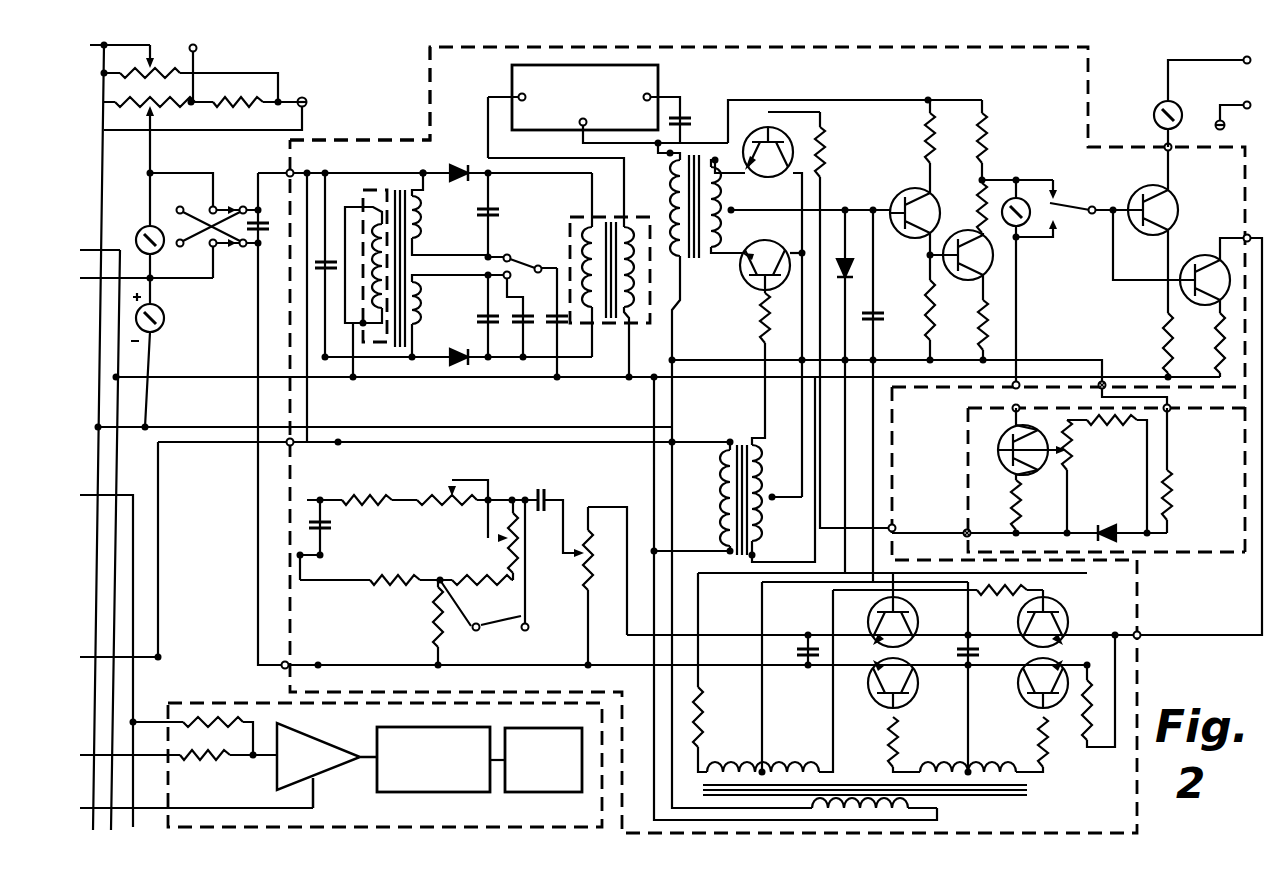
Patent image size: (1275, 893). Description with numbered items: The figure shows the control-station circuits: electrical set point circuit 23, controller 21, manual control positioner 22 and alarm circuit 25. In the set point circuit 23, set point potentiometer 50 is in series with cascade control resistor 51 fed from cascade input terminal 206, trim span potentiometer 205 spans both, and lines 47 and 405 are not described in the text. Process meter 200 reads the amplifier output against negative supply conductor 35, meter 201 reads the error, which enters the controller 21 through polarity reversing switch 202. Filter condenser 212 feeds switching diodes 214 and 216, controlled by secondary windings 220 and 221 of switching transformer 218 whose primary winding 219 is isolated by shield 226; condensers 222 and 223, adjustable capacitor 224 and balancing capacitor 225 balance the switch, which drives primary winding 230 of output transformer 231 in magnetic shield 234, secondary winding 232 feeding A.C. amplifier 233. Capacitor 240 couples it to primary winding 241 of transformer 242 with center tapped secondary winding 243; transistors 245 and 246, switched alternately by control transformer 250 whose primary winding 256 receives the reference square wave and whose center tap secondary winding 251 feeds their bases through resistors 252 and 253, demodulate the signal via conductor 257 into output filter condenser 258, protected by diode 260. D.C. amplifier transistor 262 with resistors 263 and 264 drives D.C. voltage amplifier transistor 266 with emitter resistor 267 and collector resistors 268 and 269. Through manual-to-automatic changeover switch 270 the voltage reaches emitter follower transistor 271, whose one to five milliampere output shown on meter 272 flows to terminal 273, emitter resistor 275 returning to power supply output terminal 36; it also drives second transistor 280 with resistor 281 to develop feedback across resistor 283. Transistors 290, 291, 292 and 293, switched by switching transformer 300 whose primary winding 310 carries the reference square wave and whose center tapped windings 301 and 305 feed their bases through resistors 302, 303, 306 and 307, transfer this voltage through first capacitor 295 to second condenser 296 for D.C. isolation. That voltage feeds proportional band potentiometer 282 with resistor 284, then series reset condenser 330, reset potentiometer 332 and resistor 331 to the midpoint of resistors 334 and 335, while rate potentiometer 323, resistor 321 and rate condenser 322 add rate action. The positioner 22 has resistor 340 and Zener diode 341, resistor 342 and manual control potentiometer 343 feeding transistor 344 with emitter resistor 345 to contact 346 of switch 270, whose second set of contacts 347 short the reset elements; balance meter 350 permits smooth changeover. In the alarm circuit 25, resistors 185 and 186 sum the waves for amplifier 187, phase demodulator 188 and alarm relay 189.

The controller 21 is at (776, 440).
The manual control positioner 22 is at (1068, 469).
The electrical set point circuit 23 is at (363, 108).
The alarm circuit 25 is at (385, 765).
The negative supply conductor 35 is at (99, 456).
The power supply output terminal 36 is at (178, 380).
The conductor 47 is at (90, 45).
The set point potentiometer 50 is at (128, 110).
The cascade control resistor 51 is at (226, 106).
The resistor 185 is at (213, 727).
The resistor 186 is at (186, 758).
The amplifier 187 is at (340, 726).
The phase demodulator 188 is at (430, 726).
The alarm relay 189 is at (550, 726).
The process meter 200 is at (162, 318).
The meter 201 is at (140, 232).
The polarity reversing switch 202 is at (226, 200).
The trim span potentiometer 205 is at (160, 80).
The cascade input terminal 206 is at (234, 72).
The filter condenser 212 is at (318, 268).
The first switching diode 214 is at (458, 165).
The second switching diode 216 is at (458, 370).
The switching transformer 218 is at (396, 188).
The primary winding 219 is at (368, 232).
The secondary winding 220 is at (425, 218).
The secondary winding 221 is at (426, 298).
The condenser 222 is at (498, 212).
The condenser 223 is at (478, 320).
The adjustable capacitor 224 is at (515, 330).
The balancing capacitor 225 is at (548, 335).
The shield 226 is at (362, 188).
The primary winding 230 is at (580, 243).
The output transformer 231 is at (611, 216).
The secondary winding 232 is at (628, 312).
The A.C. amplifier 233 is at (512, 70).
The magnetic shield 234 is at (580, 212).
The capacitor 240 is at (688, 118).
The primary winding 241 is at (670, 250).
The transformer 242 is at (708, 258).
The center tapped secondary winding 243 is at (733, 200).
The transistor 245 is at (760, 140).
The transistor 246 is at (775, 250).
The control transformer 250 is at (748, 440).
The center tap secondary winding 251 is at (770, 470).
The resistor 252 is at (760, 330).
The resistor 253 is at (825, 146).
The primary winding 256 is at (718, 495).
The conductor 257 is at (838, 205).
The output filter condenser 258 is at (880, 312).
The diode 260 is at (850, 255).
The D.C. amplifier transistor 262 is at (918, 188).
The resistor 263 is at (926, 134).
The resistor 264 is at (926, 322).
The D.C. voltage amplifier transistor 266 is at (960, 278).
The resistor 267 is at (978, 322).
The resistor 268 is at (978, 205).
The resistor 269 is at (990, 128).
The manual-to-automatic changeover switch 270 is at (1130, 172).
The emitter follower transistor 271 is at (1176, 196).
The meter 272 is at (1155, 104).
The terminal 273 is at (1243, 57).
The emitter resistor 275 is at (1164, 338).
The second transistor 280 is at (1202, 258).
The resistor 281 is at (1216, 326).
The proportional band potentiometer 282 is at (582, 562).
The resistor 283 is at (1082, 735).
The resistor 284 is at (584, 616).
The transistor 290 is at (905, 622).
The transistor 291 is at (1078, 600).
The transistor 292 is at (880, 692).
The transistor 293 is at (1025, 692).
The first capacitor 295 is at (960, 650).
The second condenser 296 is at (800, 638).
The switching transformer 300 is at (872, 770).
The first center tapped winding 301 is at (950, 755).
The resistor 302 is at (888, 702).
The resistor 303 is at (1050, 760).
The second center tapped winding 305 is at (790, 760).
The resistor 306 is at (700, 722).
The resistor 307 is at (1020, 596).
The primary winding 310 is at (925, 815).
The resistor 321 is at (376, 495).
The rate condenser 322 is at (328, 530).
The rate potentiometer 323 is at (440, 508).
The reset condenser 330 is at (558, 477).
The resistor 331 is at (468, 586).
The reset potentiometer 332 is at (505, 548).
The resistor 334 is at (400, 590).
The resistor 335 is at (432, 628).
The resistor 340 is at (1170, 525).
The Zener diode 341 is at (1110, 524).
The resistor 342 is at (1090, 424).
The manual control potentiometer 343 is at (1072, 460).
The transistor 344 is at (1004, 462).
The resistor 345 is at (1021, 490).
The contact 346 is at (1046, 212).
The second set of contacts 347 is at (504, 635).
The balance meter 350 is at (1005, 178).
The conductor 405 is at (157, 480).